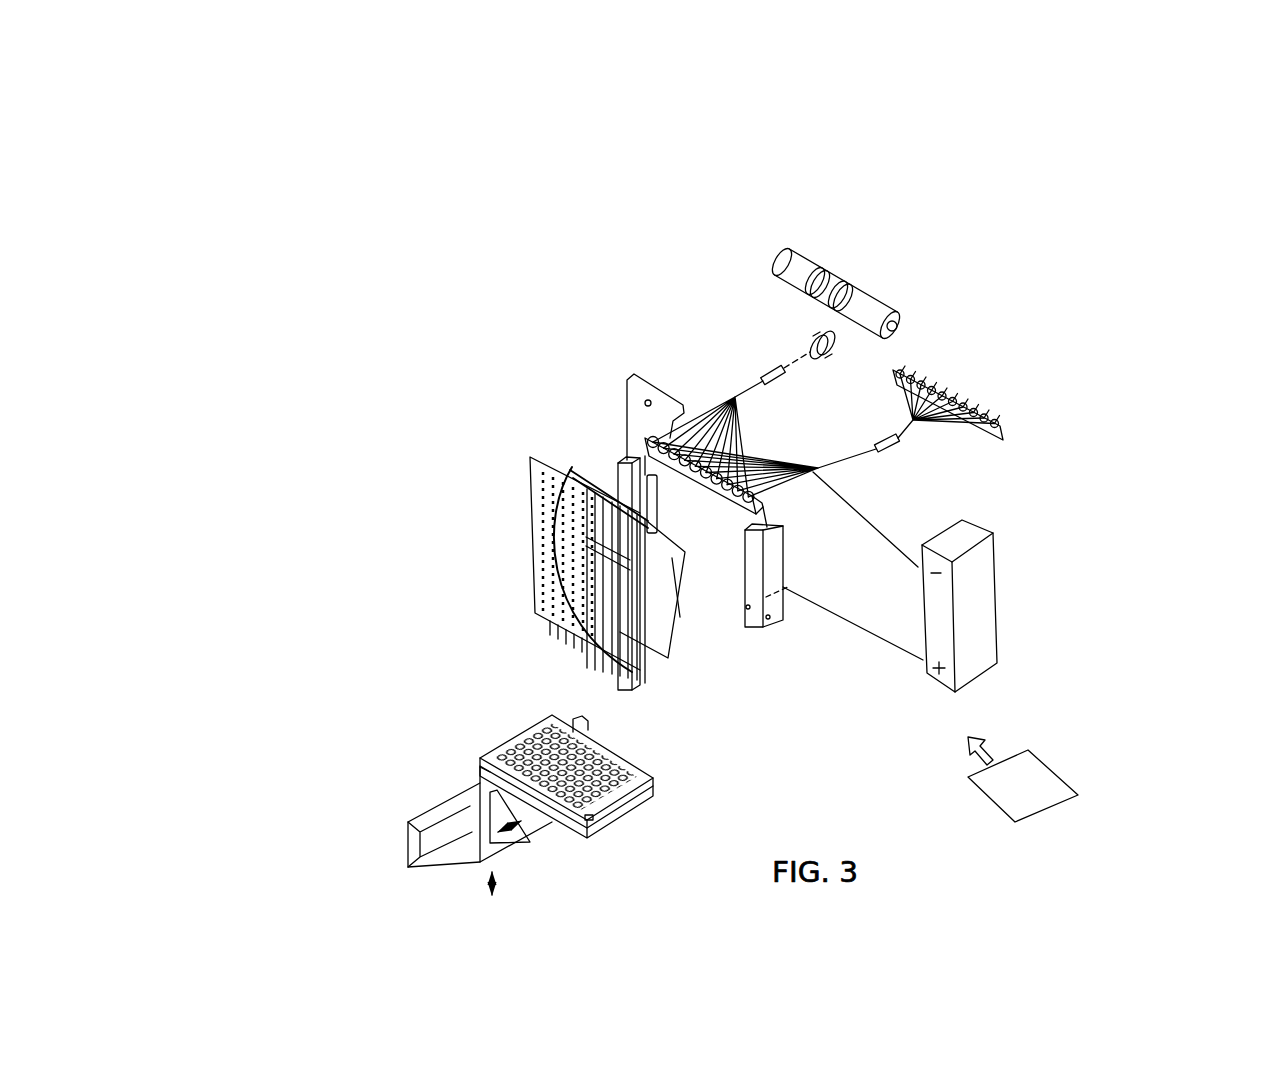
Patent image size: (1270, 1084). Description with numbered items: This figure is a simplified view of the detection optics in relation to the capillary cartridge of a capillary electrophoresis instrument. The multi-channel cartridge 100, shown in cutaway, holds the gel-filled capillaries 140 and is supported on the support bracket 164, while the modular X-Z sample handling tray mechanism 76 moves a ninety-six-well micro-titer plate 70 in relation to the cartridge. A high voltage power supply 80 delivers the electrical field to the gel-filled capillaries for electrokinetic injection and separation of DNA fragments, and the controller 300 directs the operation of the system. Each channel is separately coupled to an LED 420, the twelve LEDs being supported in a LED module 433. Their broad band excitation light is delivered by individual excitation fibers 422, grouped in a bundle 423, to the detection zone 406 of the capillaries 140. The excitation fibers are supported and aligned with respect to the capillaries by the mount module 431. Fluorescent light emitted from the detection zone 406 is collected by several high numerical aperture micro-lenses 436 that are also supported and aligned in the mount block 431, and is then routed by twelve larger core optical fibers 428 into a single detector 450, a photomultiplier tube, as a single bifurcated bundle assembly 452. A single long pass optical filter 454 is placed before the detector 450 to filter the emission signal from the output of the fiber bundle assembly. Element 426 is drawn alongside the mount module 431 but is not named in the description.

The long pass optical filter 454 is at (805, 332).
The detector 450 is at (880, 297).
The bifurcated bundle assembly 452 is at (777, 378).
The optical fibers 428 is at (783, 437).
The LED 420 is at (1012, 414).
The LED module 433 is at (1008, 437).
The bundle 423 is at (893, 447).
The excitation fibers 422 is at (858, 461).
The mount module 431 is at (647, 433).
The micro-lenses 436 is at (708, 492).
The mounting post 426 is at (777, 530).
The support bracket 164 is at (623, 445).
The detection zone 406 is at (680, 617).
The multi-channel cartridge 100 is at (530, 548).
The capillaries 140 is at (630, 617).
The high voltage power supply 80 is at (995, 605).
The controller 300 is at (1023, 779).
The micro-titer plate 70 is at (638, 765).
The sample handling tray mechanism 76 is at (508, 735).